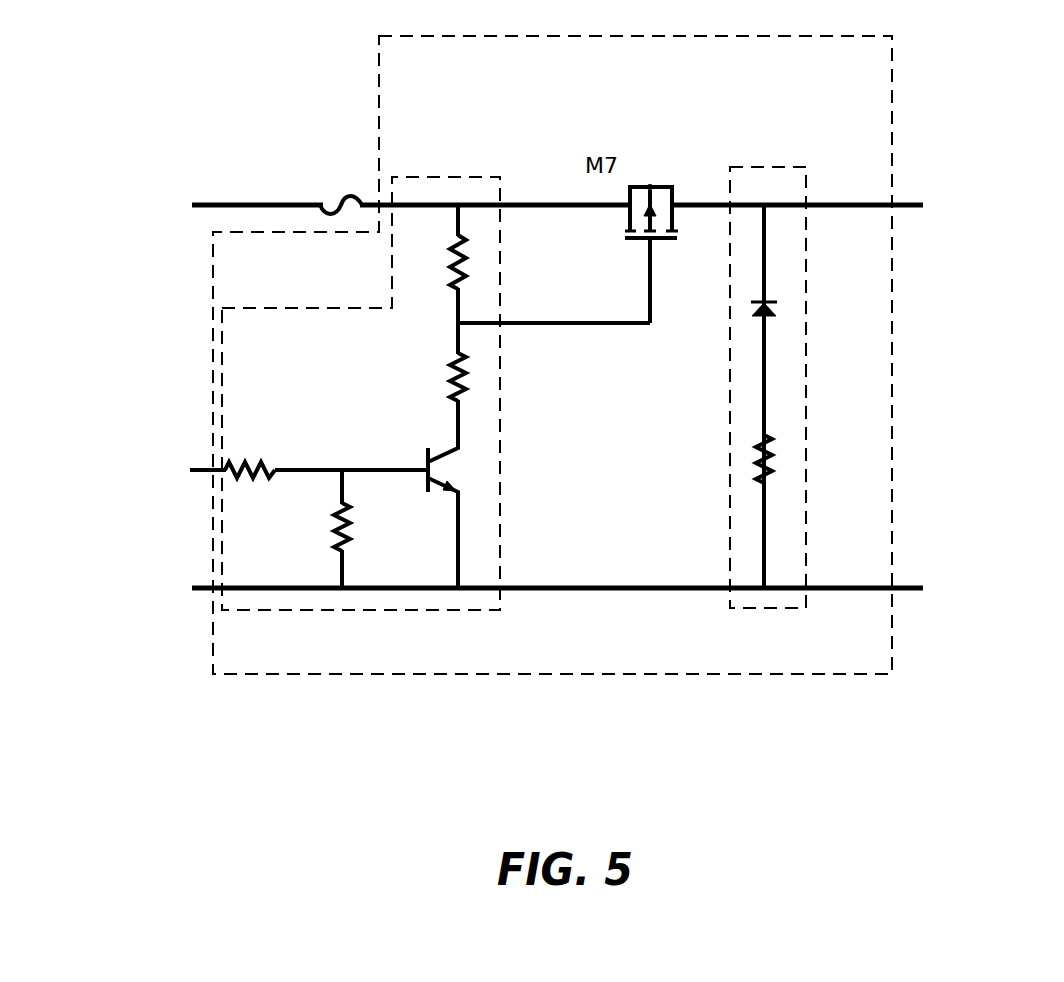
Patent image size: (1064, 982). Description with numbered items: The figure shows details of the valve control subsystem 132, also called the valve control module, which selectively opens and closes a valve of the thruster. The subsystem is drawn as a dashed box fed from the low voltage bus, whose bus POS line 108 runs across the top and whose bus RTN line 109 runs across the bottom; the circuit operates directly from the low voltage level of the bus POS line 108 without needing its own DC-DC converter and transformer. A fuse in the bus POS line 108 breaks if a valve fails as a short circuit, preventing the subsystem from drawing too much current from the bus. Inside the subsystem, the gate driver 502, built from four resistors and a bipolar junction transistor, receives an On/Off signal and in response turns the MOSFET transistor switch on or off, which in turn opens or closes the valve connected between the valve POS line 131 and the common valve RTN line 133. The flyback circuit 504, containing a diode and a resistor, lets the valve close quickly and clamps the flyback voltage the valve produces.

The bus POS line 108 is at (205, 204).
The bus RTN line 109 is at (198, 590).
The valve POS line 131 is at (905, 203).
The valve RTN line 133 is at (905, 585).
The valve control subsystem 132 is at (873, 71).
The gate driver 502 is at (465, 638).
The flyback circuit 504 is at (768, 167).